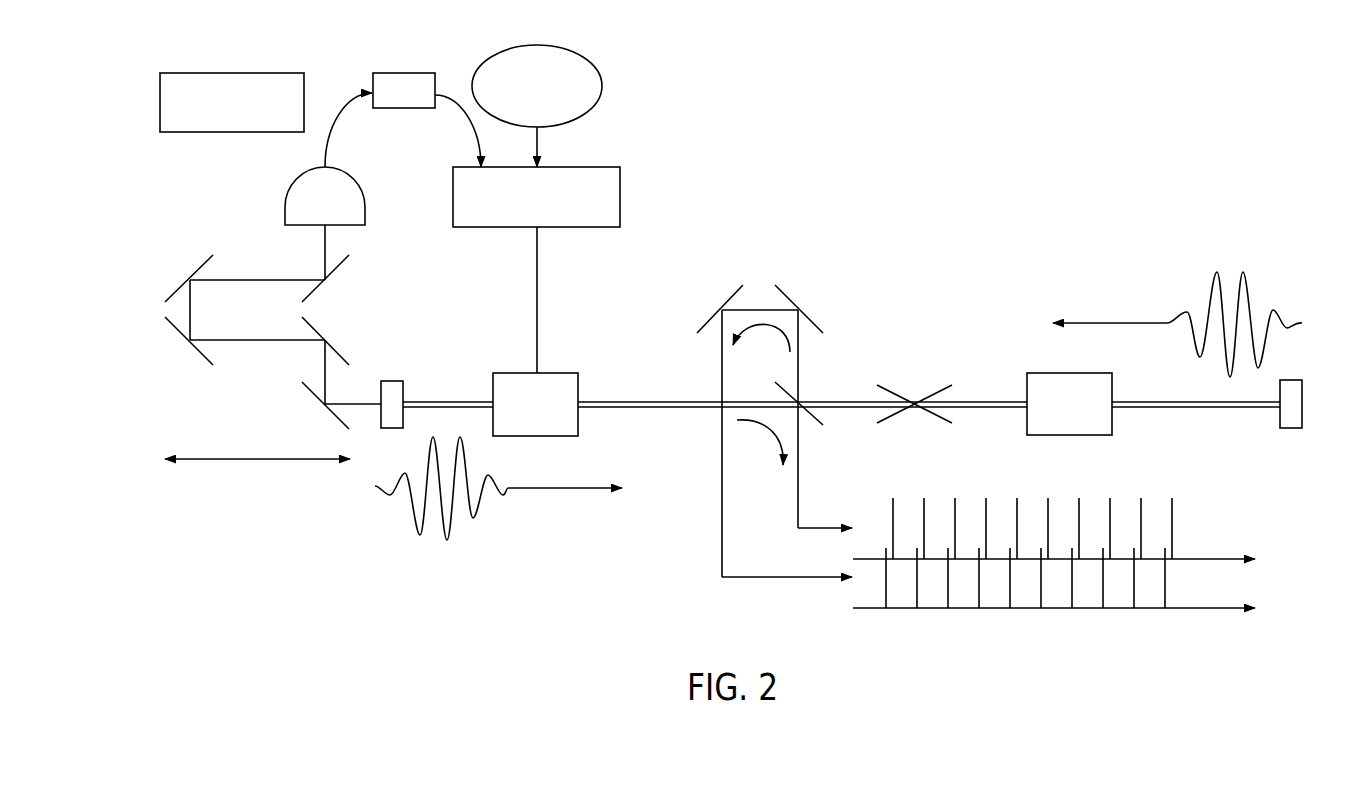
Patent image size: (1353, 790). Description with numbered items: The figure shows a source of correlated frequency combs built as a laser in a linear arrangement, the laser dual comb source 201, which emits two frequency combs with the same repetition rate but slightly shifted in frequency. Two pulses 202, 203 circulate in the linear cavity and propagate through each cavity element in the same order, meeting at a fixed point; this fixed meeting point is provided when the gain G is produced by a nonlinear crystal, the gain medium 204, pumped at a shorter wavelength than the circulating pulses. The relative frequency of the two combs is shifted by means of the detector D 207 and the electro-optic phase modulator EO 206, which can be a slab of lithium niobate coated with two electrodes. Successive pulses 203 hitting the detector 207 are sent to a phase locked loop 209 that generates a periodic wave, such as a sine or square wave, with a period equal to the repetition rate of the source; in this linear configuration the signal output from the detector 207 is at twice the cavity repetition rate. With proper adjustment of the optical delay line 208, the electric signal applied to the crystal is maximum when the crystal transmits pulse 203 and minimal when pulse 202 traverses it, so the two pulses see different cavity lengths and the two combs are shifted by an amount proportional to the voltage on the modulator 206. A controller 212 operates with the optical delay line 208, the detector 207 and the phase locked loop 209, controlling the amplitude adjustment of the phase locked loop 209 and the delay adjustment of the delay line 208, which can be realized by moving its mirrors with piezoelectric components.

The laser dual comb source 201 is at (1168, 100).
The pulse 202 is at (1248, 298).
The pulse 203 is at (413, 507).
The gain medium 204 is at (1070, 373).
The electro-optic phase modulator 206 is at (550, 373).
The detector 207 is at (350, 177).
The optical delay line 208 is at (248, 280).
The phase locked loop 209 is at (570, 167).
The controller 212 is at (232, 73).